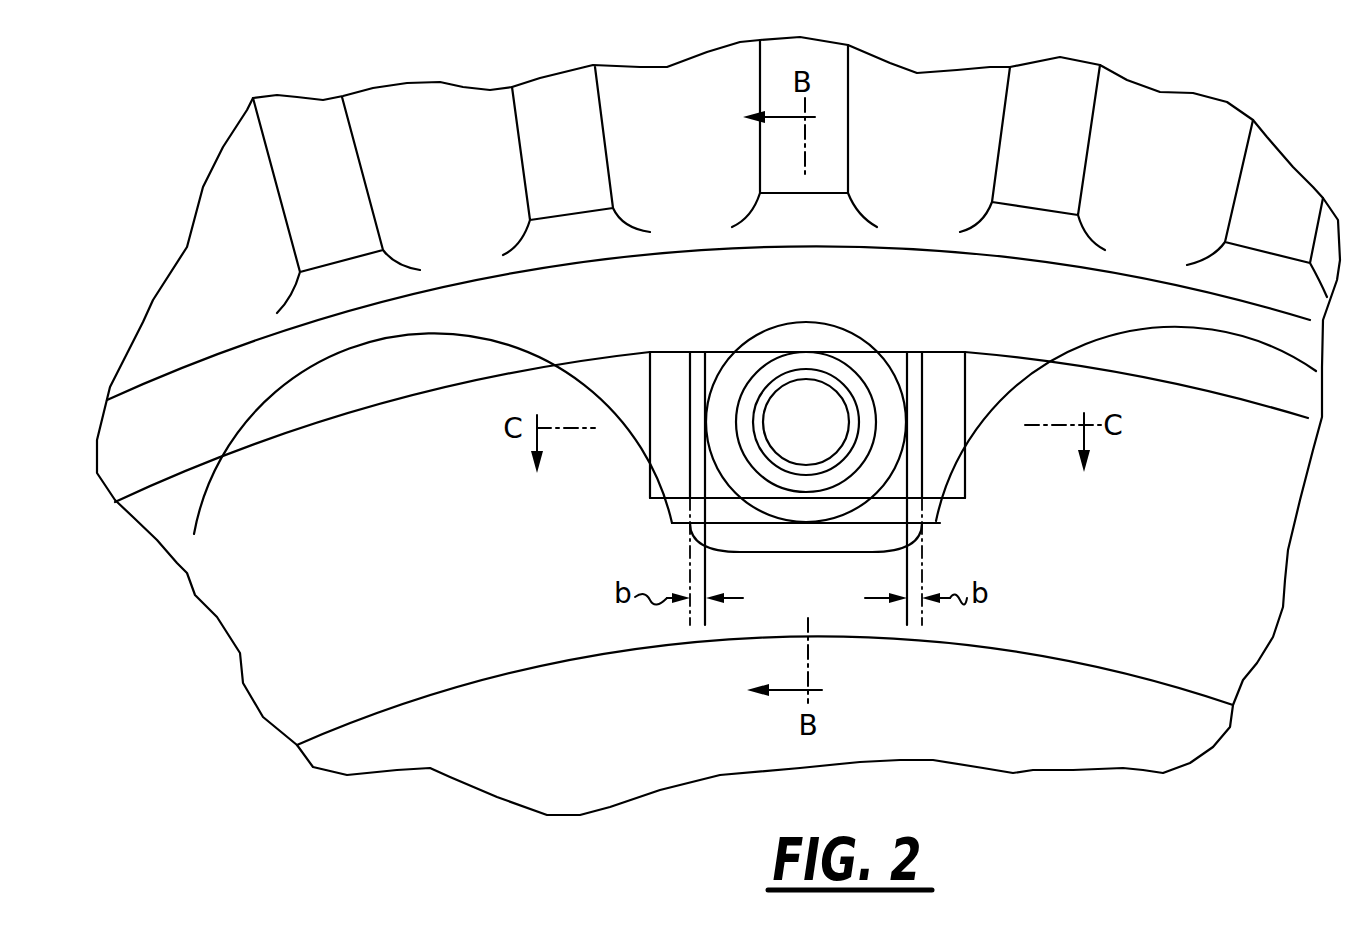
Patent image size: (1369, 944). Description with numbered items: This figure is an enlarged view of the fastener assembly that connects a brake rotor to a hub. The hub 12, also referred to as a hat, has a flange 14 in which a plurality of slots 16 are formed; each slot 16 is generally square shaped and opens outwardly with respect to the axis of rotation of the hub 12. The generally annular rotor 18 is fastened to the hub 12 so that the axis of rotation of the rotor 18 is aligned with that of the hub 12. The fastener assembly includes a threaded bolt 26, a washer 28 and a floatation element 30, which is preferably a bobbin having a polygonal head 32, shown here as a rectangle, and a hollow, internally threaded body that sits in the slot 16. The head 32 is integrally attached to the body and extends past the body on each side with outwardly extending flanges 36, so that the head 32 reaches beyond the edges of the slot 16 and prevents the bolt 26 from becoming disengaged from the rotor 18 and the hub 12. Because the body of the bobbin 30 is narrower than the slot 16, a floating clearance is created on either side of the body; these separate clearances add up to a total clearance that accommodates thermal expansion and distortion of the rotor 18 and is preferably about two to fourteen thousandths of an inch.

The hub 12 is at (460, 410).
The flange 14 is at (848, 538).
The slot 16 is at (692, 380).
The rotor 18 is at (1149, 345).
The threaded bolt 26 is at (722, 452).
The washer 28 is at (797, 545).
The floatation element 30 is at (975, 358).
The polygonal head 32 is at (658, 410).
The outwardly extending flanges 36 is at (648, 476).